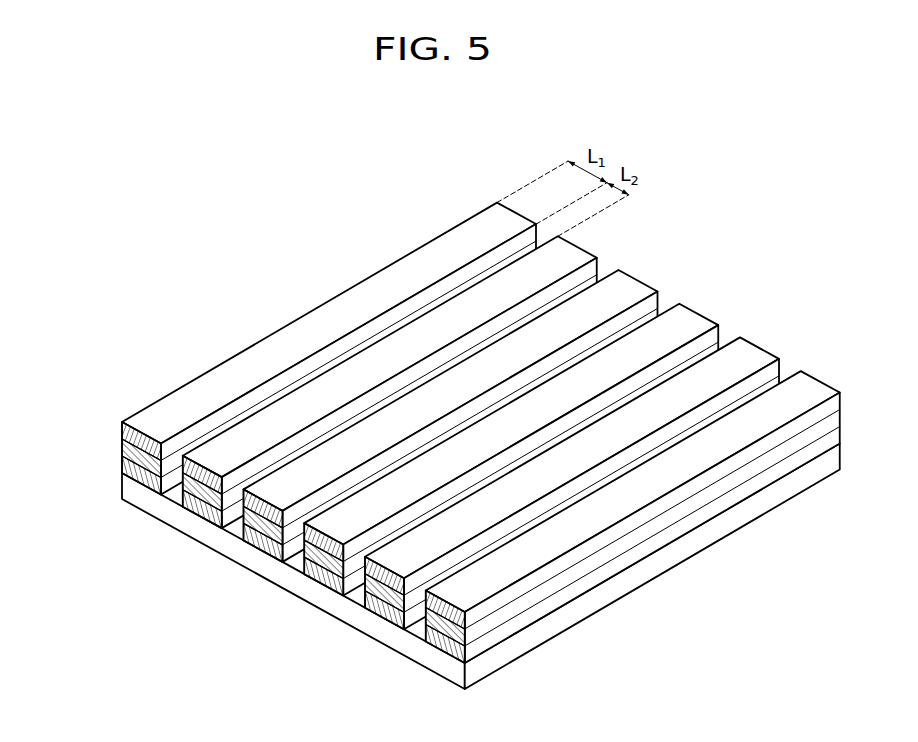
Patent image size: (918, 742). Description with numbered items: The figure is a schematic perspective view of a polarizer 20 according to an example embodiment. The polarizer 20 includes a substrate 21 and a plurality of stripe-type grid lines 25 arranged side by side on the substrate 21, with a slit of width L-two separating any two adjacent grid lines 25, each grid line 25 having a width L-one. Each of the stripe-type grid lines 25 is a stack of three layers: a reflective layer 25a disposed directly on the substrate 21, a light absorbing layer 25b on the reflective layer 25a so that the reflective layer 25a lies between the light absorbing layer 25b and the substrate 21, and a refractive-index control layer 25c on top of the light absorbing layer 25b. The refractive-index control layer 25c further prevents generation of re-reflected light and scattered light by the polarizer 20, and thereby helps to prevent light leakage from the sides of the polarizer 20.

The polarizer 20 is at (277, 230).
The substrate 21 is at (290, 578).
The stripe-type grid line 25 is at (257, 340).
The reflective layer 25a is at (122, 467).
The light absorbing layer 25b is at (122, 448).
The refractive-index control layer 25c is at (122, 432).